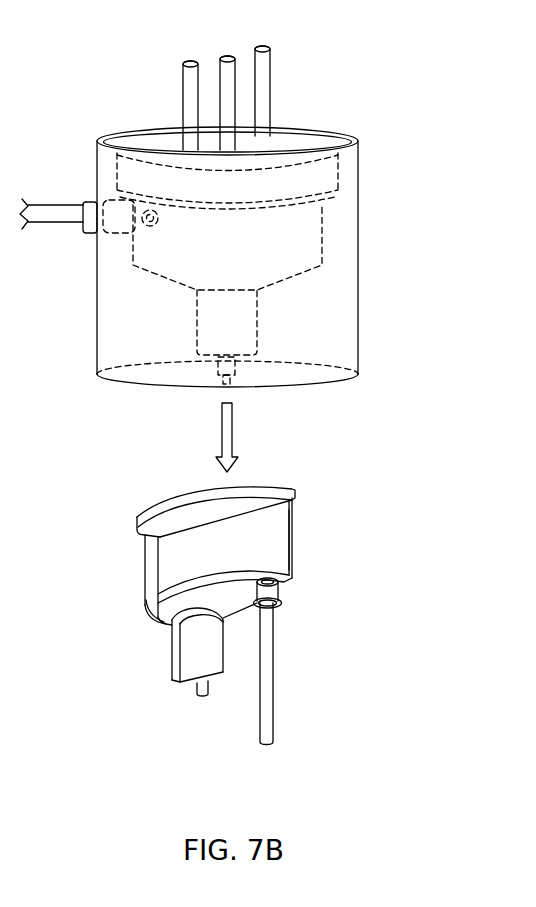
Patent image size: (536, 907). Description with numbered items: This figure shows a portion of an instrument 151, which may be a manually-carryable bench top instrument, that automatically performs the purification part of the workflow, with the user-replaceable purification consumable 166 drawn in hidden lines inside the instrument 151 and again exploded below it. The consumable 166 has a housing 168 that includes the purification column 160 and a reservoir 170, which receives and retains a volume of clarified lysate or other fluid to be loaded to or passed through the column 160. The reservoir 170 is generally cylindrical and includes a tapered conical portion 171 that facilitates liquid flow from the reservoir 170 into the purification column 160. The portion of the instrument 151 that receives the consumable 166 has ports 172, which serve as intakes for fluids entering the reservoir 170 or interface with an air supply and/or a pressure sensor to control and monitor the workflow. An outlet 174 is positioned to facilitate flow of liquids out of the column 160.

The instrument 151 is at (333, 289).
The ports 172 is at (238, 63).
The reservoir 170 is at (244, 250).
The purification column 160 is at (253, 325).
The outlet 174 is at (238, 372).
The purification consumable 166 is at (258, 532).
The housing 168 is at (292, 555).
The tapered conical portion 171 is at (153, 617).